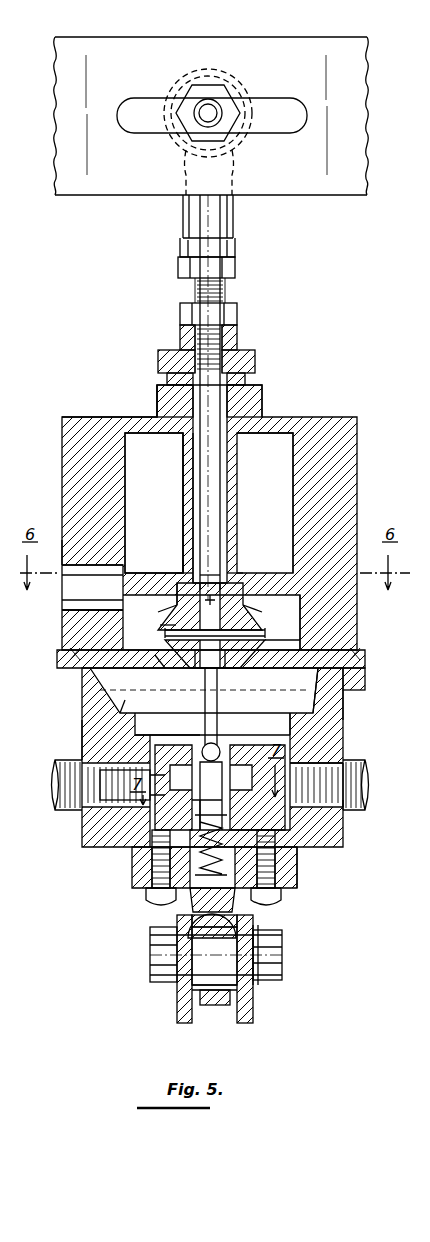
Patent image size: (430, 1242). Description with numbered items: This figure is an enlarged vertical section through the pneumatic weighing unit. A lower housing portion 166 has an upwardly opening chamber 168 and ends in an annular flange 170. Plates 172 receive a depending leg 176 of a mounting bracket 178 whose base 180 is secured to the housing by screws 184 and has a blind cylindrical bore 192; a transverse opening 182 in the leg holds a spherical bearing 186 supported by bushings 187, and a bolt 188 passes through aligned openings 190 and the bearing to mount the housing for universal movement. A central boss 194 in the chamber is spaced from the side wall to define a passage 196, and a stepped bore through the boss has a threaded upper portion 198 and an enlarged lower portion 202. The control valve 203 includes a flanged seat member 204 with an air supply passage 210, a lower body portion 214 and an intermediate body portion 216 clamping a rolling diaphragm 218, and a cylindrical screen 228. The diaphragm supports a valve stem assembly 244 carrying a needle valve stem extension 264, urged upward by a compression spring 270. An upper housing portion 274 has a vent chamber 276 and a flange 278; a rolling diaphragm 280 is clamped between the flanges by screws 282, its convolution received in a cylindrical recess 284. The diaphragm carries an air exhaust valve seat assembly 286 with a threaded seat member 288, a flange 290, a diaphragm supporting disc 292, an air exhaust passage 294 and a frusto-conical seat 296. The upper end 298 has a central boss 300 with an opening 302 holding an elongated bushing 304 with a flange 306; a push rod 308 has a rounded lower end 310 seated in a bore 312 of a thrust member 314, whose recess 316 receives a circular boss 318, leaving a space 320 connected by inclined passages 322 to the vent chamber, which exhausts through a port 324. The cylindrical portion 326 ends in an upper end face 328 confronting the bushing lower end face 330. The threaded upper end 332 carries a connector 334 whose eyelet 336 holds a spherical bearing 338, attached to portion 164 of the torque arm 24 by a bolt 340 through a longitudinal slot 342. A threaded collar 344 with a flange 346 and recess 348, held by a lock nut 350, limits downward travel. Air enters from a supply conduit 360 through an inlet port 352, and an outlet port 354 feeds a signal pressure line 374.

The torque arm 24 is at (379, 72).
The portion of the torque arm 164 is at (279, 50).
The lower housing portion 166 is at (82, 703).
The chamber 168 is at (320, 710).
The annular flange 170 is at (345, 700).
The plates 172 is at (180, 1006).
The depending leg 176 is at (197, 1008).
The mounting bracket 178 is at (309, 878).
The base 180 is at (300, 858).
The transverse opening 182 is at (225, 1010).
The screws 184 is at (152, 852).
The spherical bearing 186 is at (262, 927).
The bushings 187 is at (258, 990).
The bolt 188 is at (285, 945).
The aligned openings 190 is at (160, 937).
The blind cylindrical bore 192 is at (166, 901).
The central boss 194 is at (286, 762).
The passage 196 is at (342, 772).
The threaded upper portion 198 is at (135, 740).
The lower portion of stepped bore 202 is at (255, 798).
The control valve 203 is at (200, 736).
The flanged seat member 204 is at (285, 735).
The air supply passage 210 is at (225, 736).
The lower body portion 214 is at (175, 818).
The intermediate body portion 216 is at (170, 802).
The rolling diaphragm 218 is at (255, 818).
The cylindrical screen 228 is at (165, 776).
The valve stem assembly 244 is at (235, 709).
The needle valve stem extension 264 is at (258, 668).
The compression spring 270 is at (238, 905).
The upper housing portion 274 is at (357, 462).
The vent chamber 276 is at (272, 432).
The flange 278 is at (368, 673).
The rolling diaphragm 280 is at (62, 663).
The screws 282 is at (72, 652).
The cylindrical recess 284 is at (98, 660).
The air exhaust valve seat assembly 286 is at (283, 633).
The threaded seat member 288 is at (236, 602).
The flange 290 is at (172, 692).
The diaphragm supporting disc 292 is at (106, 640).
The air exhaust passage 294 is at (210, 597).
The frusto-conical seat 296 is at (206, 684).
The upper end 298 is at (148, 417).
The central boss 300 is at (262, 394).
The opening 302 is at (181, 433).
The elongated bushing 304 is at (186, 520).
The flange 306 is at (252, 378).
The push rod 308 is at (222, 520).
The rounded lower end 310 is at (178, 595).
The bore 312 is at (214, 575).
The thrust member 314 is at (296, 625).
The recess 316 is at (166, 628).
The circular boss 318 is at (166, 636).
The space 320 is at (165, 666).
The inclined passages 322 is at (168, 614).
The port 324 is at (72, 556).
The cylindrical portion 326 is at (185, 568).
The upper end face 328 is at (226, 585).
The lower end face 330 is at (183, 553).
The upper end of push rod 332 is at (226, 292).
The connector 334 is at (236, 208).
The eyelet 336 is at (255, 103).
The spherical bearing 338 is at (240, 143).
The bolt 340 is at (187, 97).
The longitudinal slot 342 is at (146, 130).
The threaded collar 344 is at (240, 333).
The flange 346 is at (246, 347).
The recess 348 is at (168, 355).
The lock nut 350 is at (185, 318).
The inlet port 352 is at (100, 763).
The outlet port 354 is at (345, 771).
The supply conduit 360 is at (60, 779).
The signal pressure line 374 is at (355, 802).